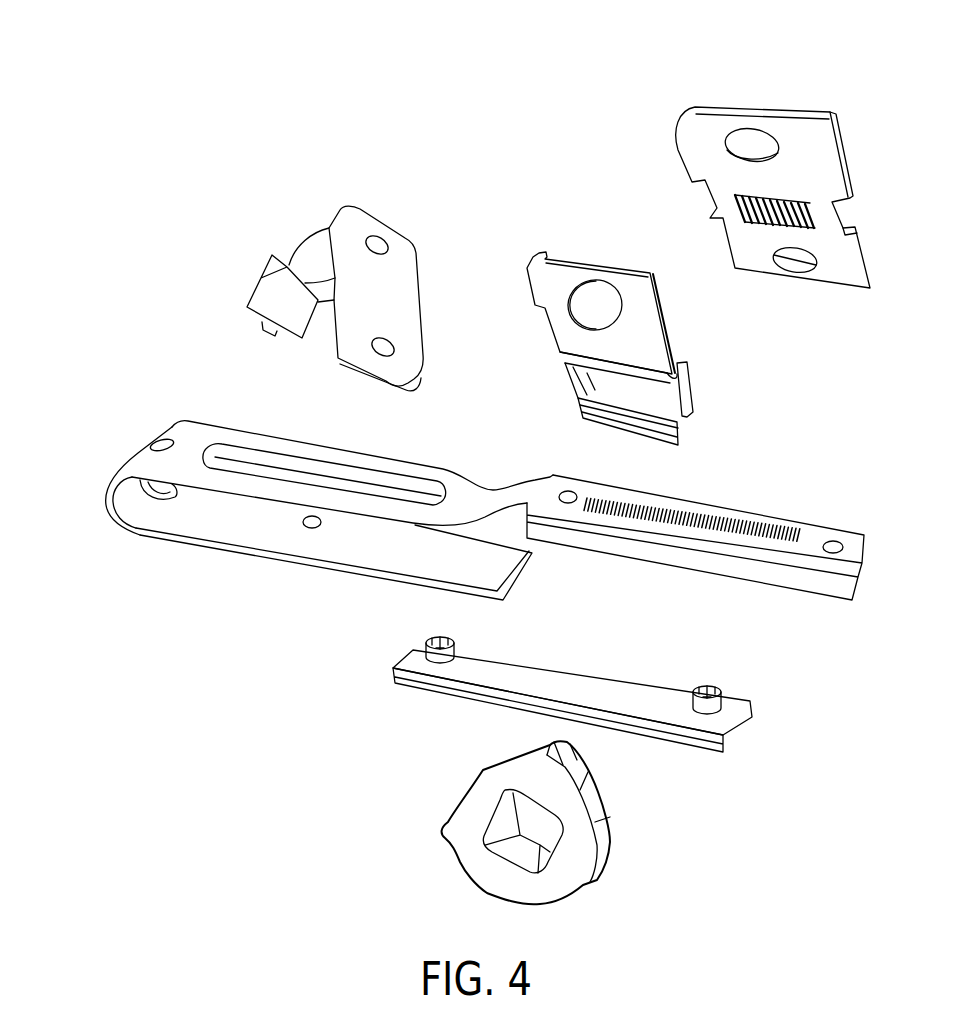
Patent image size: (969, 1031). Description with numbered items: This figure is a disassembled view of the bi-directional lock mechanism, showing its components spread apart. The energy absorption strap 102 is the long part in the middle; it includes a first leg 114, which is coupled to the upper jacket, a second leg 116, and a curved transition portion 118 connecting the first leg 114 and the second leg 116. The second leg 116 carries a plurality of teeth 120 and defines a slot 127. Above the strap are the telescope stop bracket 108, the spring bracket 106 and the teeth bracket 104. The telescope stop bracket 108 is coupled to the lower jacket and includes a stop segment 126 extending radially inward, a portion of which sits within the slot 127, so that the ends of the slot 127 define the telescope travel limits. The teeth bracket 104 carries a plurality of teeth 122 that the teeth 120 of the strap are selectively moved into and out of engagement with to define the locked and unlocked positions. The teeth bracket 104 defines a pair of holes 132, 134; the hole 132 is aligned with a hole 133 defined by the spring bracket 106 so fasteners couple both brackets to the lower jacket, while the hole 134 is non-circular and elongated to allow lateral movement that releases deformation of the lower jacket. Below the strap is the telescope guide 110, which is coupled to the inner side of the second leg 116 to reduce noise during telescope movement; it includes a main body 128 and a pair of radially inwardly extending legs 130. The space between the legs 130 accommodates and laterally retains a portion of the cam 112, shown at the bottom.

The energy absorption strap 102 is at (196, 401).
The teeth bracket 104 is at (856, 86).
The spring bracket 106 is at (552, 231).
The telescope stop bracket 108 is at (391, 197).
The telescope guide 110 is at (767, 744).
The cam 112 is at (583, 853).
The first leg 114 is at (268, 540).
The second leg 116 is at (467, 497).
The curved transition portion 118 is at (104, 498).
The plurality of teeth 120 is at (782, 532).
The plurality of teeth 122 is at (770, 227).
The stop segment 126 is at (262, 287).
The slot 127 is at (331, 473).
The main body 128 is at (560, 685).
The radially inwardly extending legs 130 is at (753, 712).
The hole 132 is at (732, 128).
The hole 133 is at (585, 316).
The hole 134 is at (804, 276).